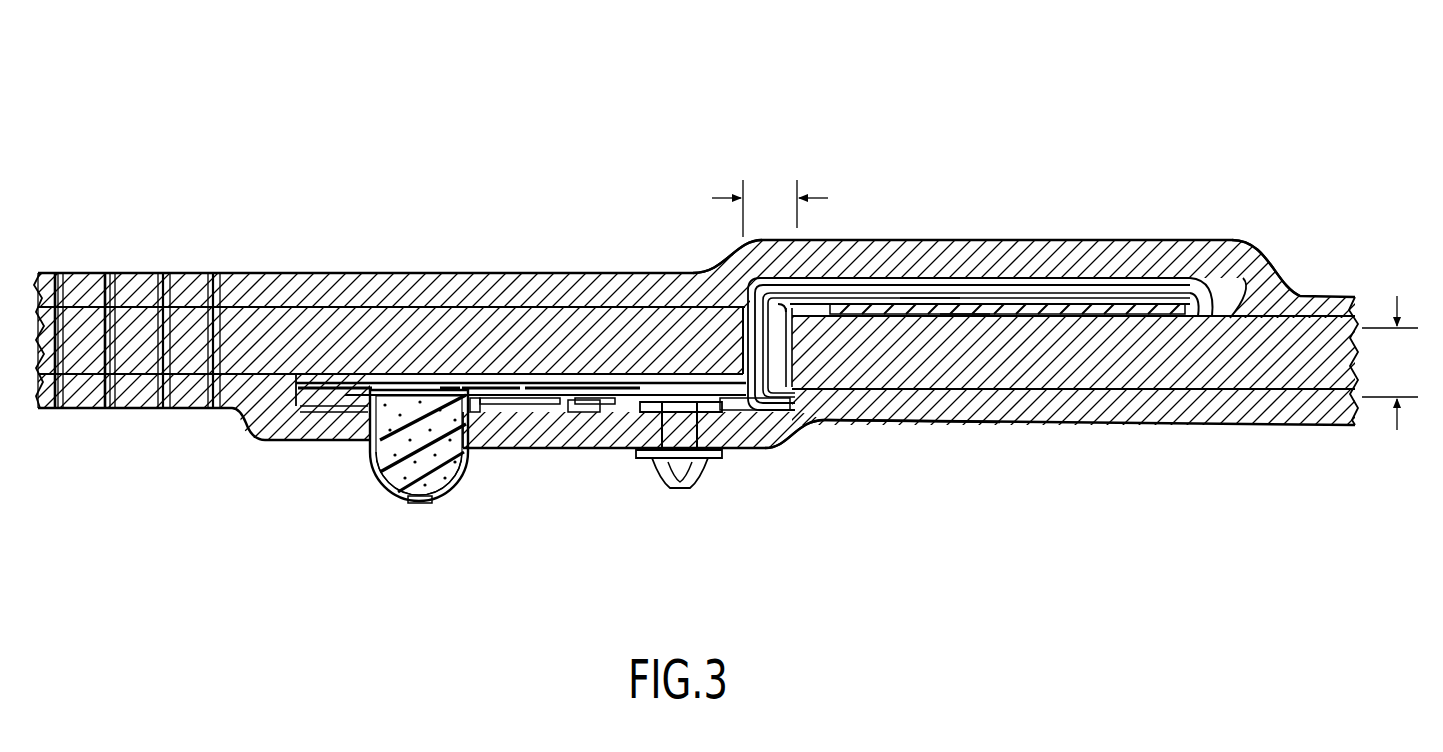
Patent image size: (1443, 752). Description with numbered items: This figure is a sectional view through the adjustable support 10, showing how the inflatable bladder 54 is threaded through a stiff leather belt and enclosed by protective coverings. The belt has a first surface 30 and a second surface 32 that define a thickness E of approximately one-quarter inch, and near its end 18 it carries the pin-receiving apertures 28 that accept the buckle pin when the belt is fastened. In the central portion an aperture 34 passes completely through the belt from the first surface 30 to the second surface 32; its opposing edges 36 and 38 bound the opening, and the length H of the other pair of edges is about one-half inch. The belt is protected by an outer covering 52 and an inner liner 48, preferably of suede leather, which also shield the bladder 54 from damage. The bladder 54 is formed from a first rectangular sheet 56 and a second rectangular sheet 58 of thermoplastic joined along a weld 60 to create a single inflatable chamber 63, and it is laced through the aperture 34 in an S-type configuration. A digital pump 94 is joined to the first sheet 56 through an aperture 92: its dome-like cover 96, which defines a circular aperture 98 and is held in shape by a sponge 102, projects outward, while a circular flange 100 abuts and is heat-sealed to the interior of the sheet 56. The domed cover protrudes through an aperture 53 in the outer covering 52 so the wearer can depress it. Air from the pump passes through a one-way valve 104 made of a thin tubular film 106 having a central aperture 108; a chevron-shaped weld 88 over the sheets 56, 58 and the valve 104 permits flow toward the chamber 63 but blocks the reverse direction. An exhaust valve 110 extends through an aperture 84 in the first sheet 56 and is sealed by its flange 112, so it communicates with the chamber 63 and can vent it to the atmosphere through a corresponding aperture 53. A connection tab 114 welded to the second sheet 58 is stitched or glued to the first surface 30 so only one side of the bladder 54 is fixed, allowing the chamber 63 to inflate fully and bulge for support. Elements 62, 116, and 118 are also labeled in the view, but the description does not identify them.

The adjustable support 10 is at (717, 133).
The end of belt 18 is at (108, 438).
The pin-receiving apertures 28 is at (62, 277).
The first surface 30 is at (286, 322).
The second surface 32 is at (470, 352).
The aperture 34 is at (870, 422).
The edge of aperture 36 is at (690, 345).
The edge of aperture 38 is at (900, 396).
The inner liner 48 is at (371, 272).
The outer covering 52 is at (245, 416).
The aperture in outer covering 53 is at (480, 442).
The bladder 54 is at (990, 300).
The first rectangular sheet 56 is at (832, 300).
The second rectangular sheet 58 is at (341, 340).
The weld 60 is at (1217, 305).
The edge portion 62 is at (1260, 300).
The inflatable chamber 63 is at (928, 296).
The aperture in first sheet 84 is at (660, 472).
The chevron-shaped weld 88 is at (590, 450).
The aperture in first sheet 92 is at (356, 416).
The digital pump 94 is at (378, 472).
The dome-like cover 96 is at (456, 490).
The circular aperture 98 is at (416, 505).
The circular flange 100 is at (322, 396).
The sponge 102 is at (440, 503).
The one-way valve 104 is at (546, 380).
The thin tubular film 106 is at (592, 392).
The central aperture 108 is at (508, 383).
The exhaust valve 110 is at (714, 456).
The flange of exhaust valve 112 is at (782, 440).
The connection tab 114 is at (1100, 420).
The contact 116 is at (962, 300).
The contact 118 is at (1000, 322).
The length of aperture edges H is at (770, 208).
The thickness of belt E is at (1390, 363).